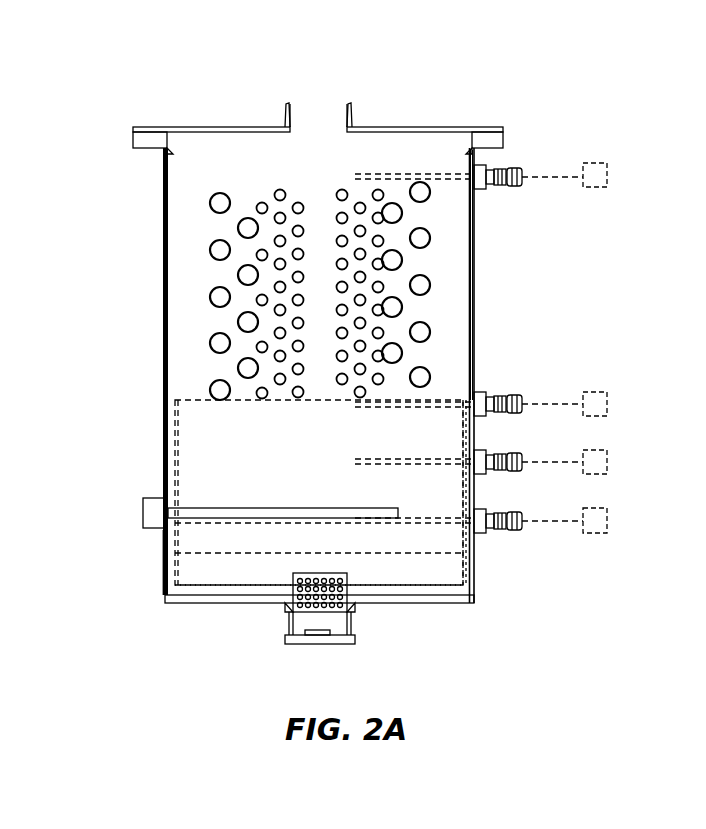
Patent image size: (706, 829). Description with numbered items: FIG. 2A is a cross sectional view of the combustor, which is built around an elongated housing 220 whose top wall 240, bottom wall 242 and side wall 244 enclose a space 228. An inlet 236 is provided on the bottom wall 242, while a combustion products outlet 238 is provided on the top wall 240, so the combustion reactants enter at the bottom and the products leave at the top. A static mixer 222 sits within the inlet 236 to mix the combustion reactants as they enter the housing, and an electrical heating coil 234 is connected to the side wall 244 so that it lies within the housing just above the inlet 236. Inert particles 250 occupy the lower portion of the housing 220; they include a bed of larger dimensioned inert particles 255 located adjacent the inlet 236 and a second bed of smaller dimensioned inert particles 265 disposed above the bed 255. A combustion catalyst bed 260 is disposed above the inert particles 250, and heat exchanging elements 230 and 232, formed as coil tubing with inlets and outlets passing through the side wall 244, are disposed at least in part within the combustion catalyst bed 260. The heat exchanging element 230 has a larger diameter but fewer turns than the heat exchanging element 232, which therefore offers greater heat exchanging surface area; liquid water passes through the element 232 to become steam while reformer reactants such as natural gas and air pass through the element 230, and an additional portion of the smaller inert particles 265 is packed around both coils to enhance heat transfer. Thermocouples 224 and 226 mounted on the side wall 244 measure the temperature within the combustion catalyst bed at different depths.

The elongated housing 220 is at (172, 64).
The static mixer 222 is at (352, 620).
The thermocouple 224 is at (609, 404).
The thermocouple 226 is at (607, 165).
The space 228 is at (474, 255).
The heat exchanging element 230 is at (212, 296).
The heat exchanging element 232 is at (275, 287).
The electrical heating coil 234 is at (143, 508).
The inlet 236 is at (322, 648).
The combustion products outlet 238 is at (318, 108).
The top wall 240 is at (385, 127).
The bottom wall 242 is at (190, 604).
The side wall 244 is at (475, 338).
The inert particles 250 is at (140, 528).
The bed of larger dimensioned inert particles 255 is at (440, 567).
The combustion catalyst bed 260 is at (240, 451).
The smaller dimensioned inert particles 265 is at (240, 172).